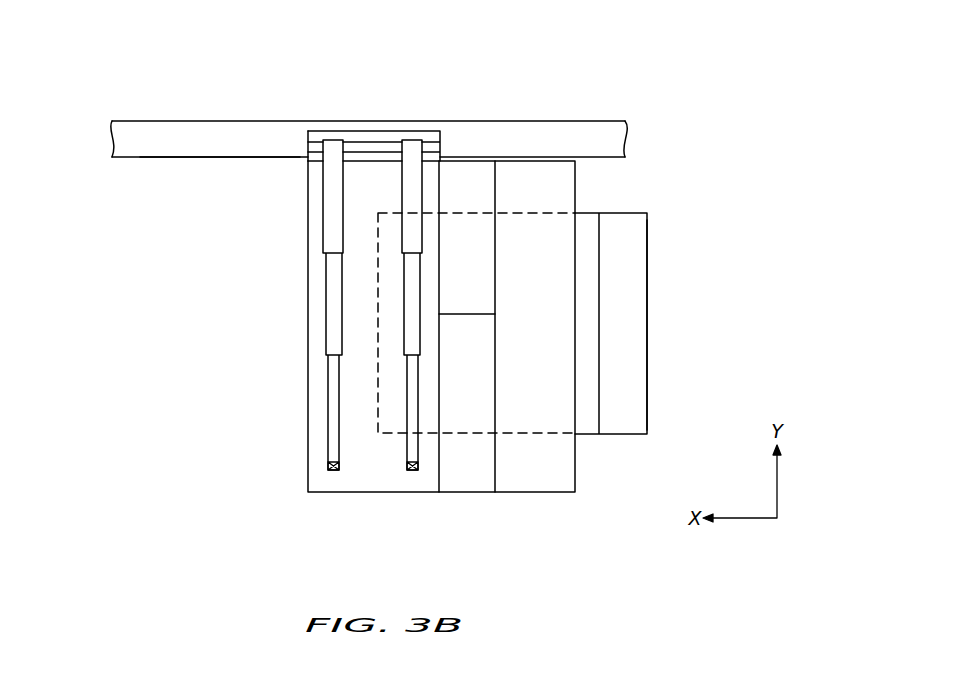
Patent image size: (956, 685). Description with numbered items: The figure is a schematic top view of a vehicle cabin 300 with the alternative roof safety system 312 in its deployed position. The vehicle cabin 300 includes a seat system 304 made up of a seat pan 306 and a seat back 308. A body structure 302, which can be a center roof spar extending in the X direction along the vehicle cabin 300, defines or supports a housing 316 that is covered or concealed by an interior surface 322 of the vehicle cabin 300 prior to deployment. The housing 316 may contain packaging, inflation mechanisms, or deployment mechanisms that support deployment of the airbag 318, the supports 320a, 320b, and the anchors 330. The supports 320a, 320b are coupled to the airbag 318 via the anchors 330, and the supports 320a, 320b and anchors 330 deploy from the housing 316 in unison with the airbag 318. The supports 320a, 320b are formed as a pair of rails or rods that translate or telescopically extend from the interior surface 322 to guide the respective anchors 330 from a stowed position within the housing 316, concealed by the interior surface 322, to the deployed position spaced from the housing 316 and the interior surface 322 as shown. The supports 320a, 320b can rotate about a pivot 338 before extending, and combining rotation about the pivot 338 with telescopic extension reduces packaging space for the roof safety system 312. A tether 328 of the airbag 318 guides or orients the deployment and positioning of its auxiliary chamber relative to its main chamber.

The vehicle cabin 300 is at (648, 196).
The body structure 302 is at (573, 120).
The seat system 304 is at (660, 368).
The seat pan 306 is at (565, 433).
The seat back 308 is at (647, 232).
The roof safety system 312 is at (233, 79).
The housing 316 is at (308, 137).
The airbag 318 is at (308, 417).
The support 320a is at (336, 131).
The support 320b is at (421, 131).
The interior surface 322 is at (140, 157).
The tether 328 is at (470, 314).
The anchors 330 is at (333, 471).
The pivot 338 is at (378, 142).